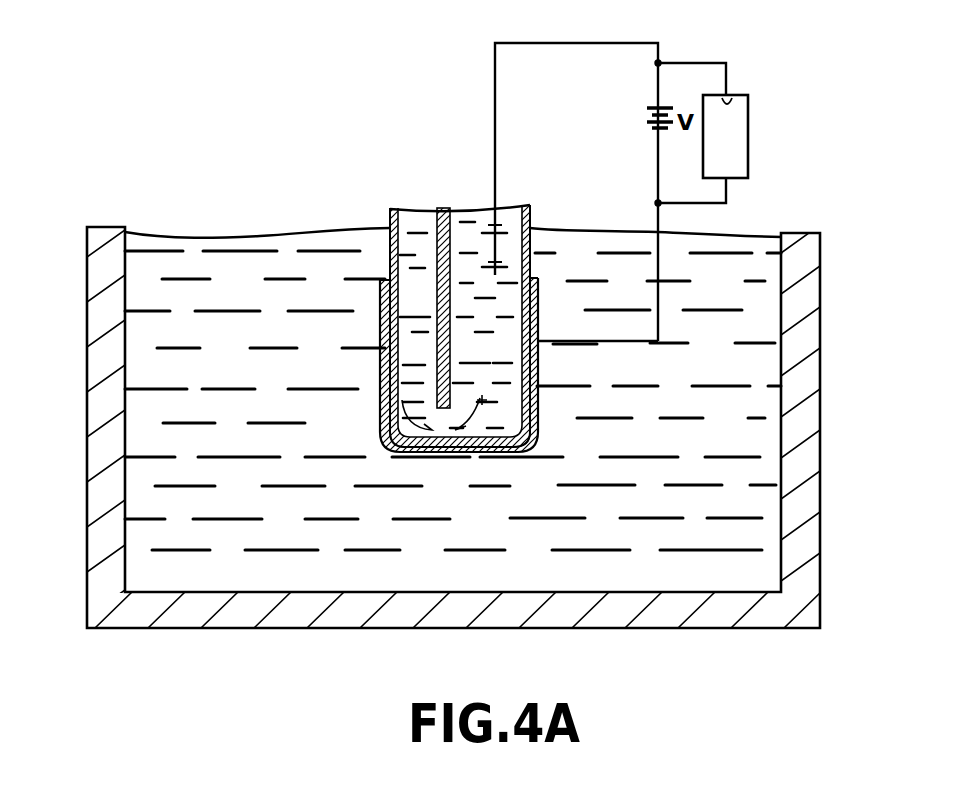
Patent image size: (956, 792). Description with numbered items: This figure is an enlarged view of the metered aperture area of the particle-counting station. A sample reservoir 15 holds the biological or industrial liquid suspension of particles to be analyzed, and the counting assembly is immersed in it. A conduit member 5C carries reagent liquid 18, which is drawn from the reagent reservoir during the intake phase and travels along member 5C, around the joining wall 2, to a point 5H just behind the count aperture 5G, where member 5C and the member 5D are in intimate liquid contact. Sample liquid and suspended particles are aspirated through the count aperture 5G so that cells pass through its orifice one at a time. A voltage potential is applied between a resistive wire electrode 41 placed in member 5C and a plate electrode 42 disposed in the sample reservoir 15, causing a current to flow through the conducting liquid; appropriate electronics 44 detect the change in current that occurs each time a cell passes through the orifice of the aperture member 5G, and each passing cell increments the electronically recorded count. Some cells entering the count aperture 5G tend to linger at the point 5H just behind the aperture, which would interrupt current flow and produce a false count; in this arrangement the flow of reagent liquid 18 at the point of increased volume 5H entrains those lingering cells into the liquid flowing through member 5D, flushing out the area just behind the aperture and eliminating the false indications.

The reservoir 15 is at (113, 235).
The reagent 18 is at (418, 227).
The joining wall 2 is at (445, 227).
The conduit member 5C is at (390, 223).
The member 5D is at (523, 207).
The resistive wire electrode 41 is at (497, 120).
The plate electrode 42 is at (538, 302).
The electronics 44 is at (748, 100).
The count aperture 5G is at (440, 462).
The point of increased volume 5H is at (452, 410).